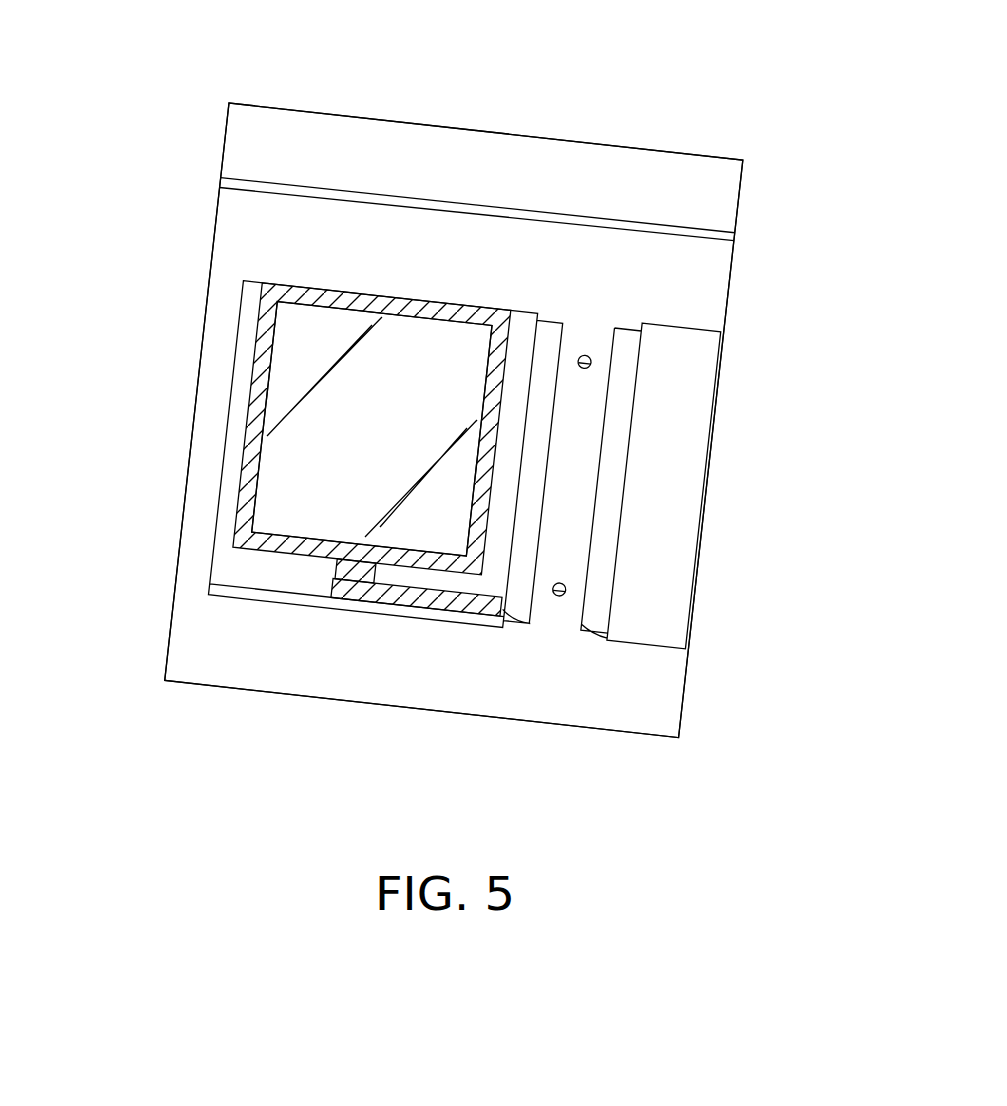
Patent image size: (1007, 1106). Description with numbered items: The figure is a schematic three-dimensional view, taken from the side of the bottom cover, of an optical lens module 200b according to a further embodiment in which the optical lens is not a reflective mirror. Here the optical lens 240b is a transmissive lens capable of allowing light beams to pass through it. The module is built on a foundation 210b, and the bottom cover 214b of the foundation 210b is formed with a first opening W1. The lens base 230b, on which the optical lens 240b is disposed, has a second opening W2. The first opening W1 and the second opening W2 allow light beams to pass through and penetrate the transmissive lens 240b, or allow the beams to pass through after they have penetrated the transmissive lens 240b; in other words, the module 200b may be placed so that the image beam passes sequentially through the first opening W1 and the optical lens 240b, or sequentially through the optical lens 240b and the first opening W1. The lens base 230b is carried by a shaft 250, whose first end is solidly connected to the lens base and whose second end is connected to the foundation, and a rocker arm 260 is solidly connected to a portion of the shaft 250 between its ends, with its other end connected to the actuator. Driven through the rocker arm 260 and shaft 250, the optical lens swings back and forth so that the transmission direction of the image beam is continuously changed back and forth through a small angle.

The optical lens module 200b is at (823, 829).
The foundation 210b is at (724, 203).
The bottom cover 214b is at (723, 237).
The lens base 230b is at (244, 281).
The optical lens 240b is at (430, 337).
The shaft 250 is at (337, 578).
The rocker arm 260 is at (434, 603).
The first opening W1 is at (239, 453).
The second opening W2 is at (283, 361).